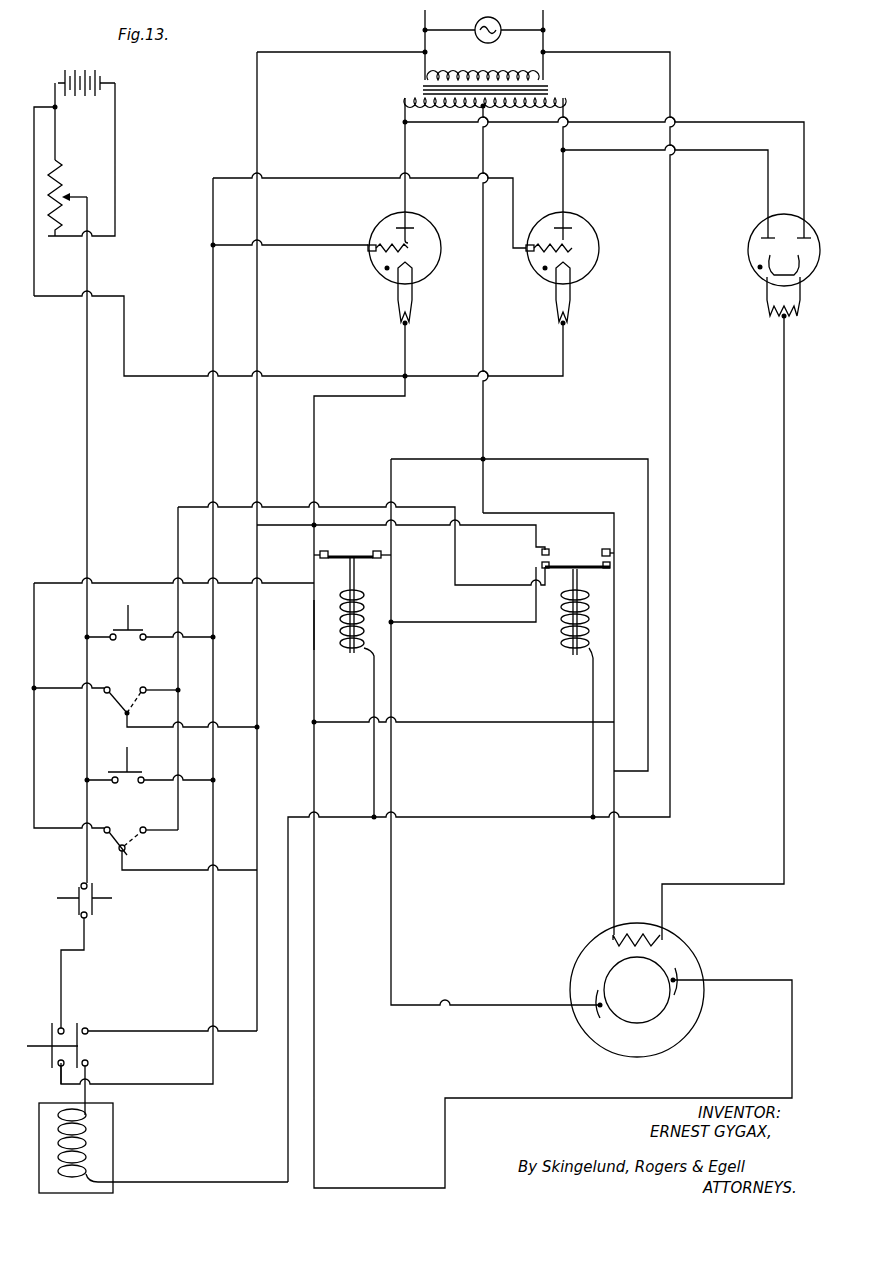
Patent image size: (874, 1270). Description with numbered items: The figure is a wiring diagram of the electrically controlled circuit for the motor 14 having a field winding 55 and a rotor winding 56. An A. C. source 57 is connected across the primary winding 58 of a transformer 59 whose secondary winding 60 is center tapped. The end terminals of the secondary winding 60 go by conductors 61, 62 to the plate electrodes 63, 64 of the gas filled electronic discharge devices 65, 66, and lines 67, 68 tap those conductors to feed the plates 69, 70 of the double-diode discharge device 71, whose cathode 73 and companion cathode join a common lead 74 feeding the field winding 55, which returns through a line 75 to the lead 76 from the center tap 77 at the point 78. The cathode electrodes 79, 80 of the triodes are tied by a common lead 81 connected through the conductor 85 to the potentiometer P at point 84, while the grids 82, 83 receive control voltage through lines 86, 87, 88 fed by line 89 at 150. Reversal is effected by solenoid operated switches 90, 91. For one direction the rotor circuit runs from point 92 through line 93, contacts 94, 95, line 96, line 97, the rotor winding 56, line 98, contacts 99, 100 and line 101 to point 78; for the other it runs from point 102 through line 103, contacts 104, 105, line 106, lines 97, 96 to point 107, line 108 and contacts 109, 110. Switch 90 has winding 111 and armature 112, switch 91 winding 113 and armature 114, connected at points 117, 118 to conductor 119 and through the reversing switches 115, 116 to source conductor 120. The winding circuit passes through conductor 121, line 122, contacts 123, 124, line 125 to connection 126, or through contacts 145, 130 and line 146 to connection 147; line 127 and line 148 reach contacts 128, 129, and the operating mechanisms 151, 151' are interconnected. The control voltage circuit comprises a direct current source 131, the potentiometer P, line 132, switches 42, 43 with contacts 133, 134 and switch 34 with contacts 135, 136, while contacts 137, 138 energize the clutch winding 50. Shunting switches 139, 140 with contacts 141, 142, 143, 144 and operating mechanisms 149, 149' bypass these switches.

The direct current source 131 is at (79, 68).
The point 84 is at (55, 105).
The potentiometer P is at (62, 189).
The A. C. source 57 is at (502, 25).
The primary winding 58 is at (530, 72).
The transformer 59 is at (550, 92).
The secondary winding 60 is at (412, 98).
The source conductor 120 is at (290, 52).
The conductor 119 is at (665, 52).
The conductor 61 is at (407, 160).
The conductor 62 is at (568, 183).
The center tap 77 is at (481, 108).
The lead 76 is at (488, 149).
The line 67 is at (772, 122).
The line 68 is at (720, 152).
The line 87 is at (236, 178).
The line 89 is at (211, 313).
The connection point 150 is at (211, 246).
The line 88 is at (300, 245).
The electronic discharge device 65 is at (409, 265).
The plate electrode 63 is at (404, 248).
The grid 82 is at (372, 244).
The cathode electrode 79 is at (412, 275).
The electronic discharge device 66 is at (580, 262).
The grid 83 is at (578, 248).
The line 86 is at (530, 244).
The plate electrode 64 is at (575, 230).
The cathode electrode 80 is at (572, 272).
The common lead 81 is at (567, 378).
The plate 70 is at (761, 266).
The plate 69 is at (760, 238).
The cathode 73 is at (806, 255).
The electronic discharge device 71 is at (756, 272).
The common lead 74 is at (788, 396).
The conductor 85 is at (138, 378).
The line 132 is at (85, 370).
The point 92 is at (409, 376).
The line 93 is at (316, 435).
The line 75 is at (600, 459).
The point 78 is at (486, 458).
The line 101 is at (428, 462).
The line 98 is at (389, 605).
The line 127 is at (176, 541).
The point 102 is at (310, 526).
The line 103 is at (426, 528).
The solenoid operated switch 90 is at (352, 673).
The contact 94 is at (330, 545).
The contact 95 is at (350, 548).
The contact 100 is at (380, 540).
The contact 99 is at (355, 575).
The armature 112 is at (349, 578).
The winding 111 is at (334, 650).
The line 96 is at (312, 628).
The point 107 is at (317, 726).
The line 108 is at (478, 724).
The connection 126 is at (311, 720).
The point 117 is at (372, 820).
The point 118 is at (590, 820).
The solenoid operated switch 91 is at (502, 724).
The contact 110 is at (606, 549).
The contact 104 is at (548, 549).
The contact 105 is at (541, 563).
The contact 109 is at (600, 565).
The armature 114 is at (578, 575).
The winding 113 is at (565, 660).
The line 106 is at (500, 612).
The conductor 121 is at (60, 583).
The shunting switch 139 is at (150, 624).
The contact 141 is at (114, 641).
The contact 142 is at (145, 634).
The operating mechanism 149 is at (109, 611).
The line 122 is at (64, 688).
The reversing switch 115 is at (136, 691).
The operating mechanism 151 is at (117, 679).
The contact 129 is at (145, 687).
The contact 123 is at (118, 702).
The contact 124 is at (130, 713).
The line 125 is at (243, 727).
The shunting switch 140 is at (150, 773).
The contact 143 is at (116, 784).
The contact 144 is at (144, 778).
The operating mechanism 149' is at (107, 757).
The line 148 is at (66, 800).
The reversing switch 116 is at (137, 829).
The contact 145 is at (112, 821).
The contact 128 is at (146, 834).
The contact 130 is at (120, 851).
The operating mechanism 151' is at (139, 851).
The connection 147 is at (257, 870).
The line 146 is at (210, 882).
The switch member 42 is at (87, 945).
The switch member 43 is at (69, 904).
The contact 133 is at (82, 884).
The contact 134 is at (81, 918).
The switch 34 is at (141, 1053).
The contact 135 is at (59, 1028).
The contact 137 is at (89, 1030).
The contact 136 is at (59, 1066).
The contact 138 is at (96, 1051).
The magnetic coil 50 is at (100, 1155).
The motor 14 is at (634, 990).
The rotor winding 56 is at (696, 1008).
The field winding 55 is at (665, 943).
The line 97 is at (317, 978).